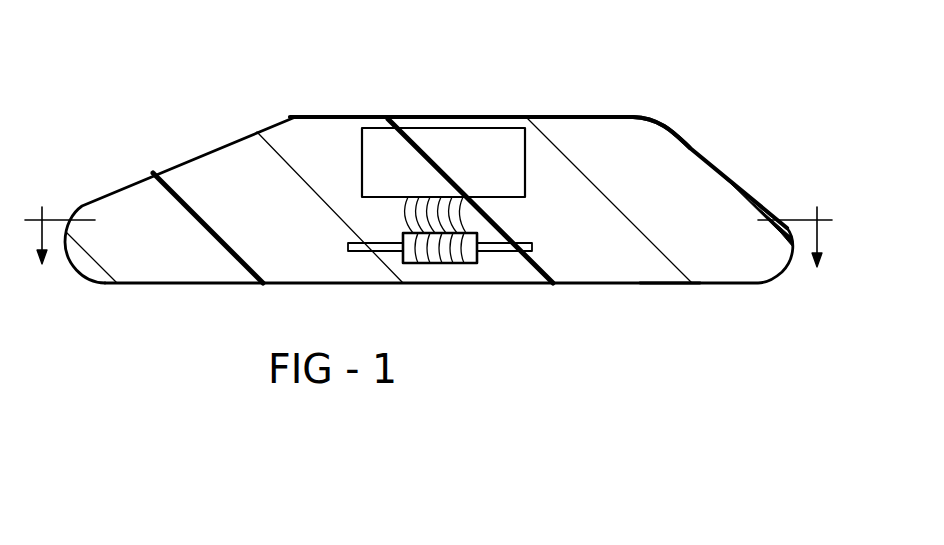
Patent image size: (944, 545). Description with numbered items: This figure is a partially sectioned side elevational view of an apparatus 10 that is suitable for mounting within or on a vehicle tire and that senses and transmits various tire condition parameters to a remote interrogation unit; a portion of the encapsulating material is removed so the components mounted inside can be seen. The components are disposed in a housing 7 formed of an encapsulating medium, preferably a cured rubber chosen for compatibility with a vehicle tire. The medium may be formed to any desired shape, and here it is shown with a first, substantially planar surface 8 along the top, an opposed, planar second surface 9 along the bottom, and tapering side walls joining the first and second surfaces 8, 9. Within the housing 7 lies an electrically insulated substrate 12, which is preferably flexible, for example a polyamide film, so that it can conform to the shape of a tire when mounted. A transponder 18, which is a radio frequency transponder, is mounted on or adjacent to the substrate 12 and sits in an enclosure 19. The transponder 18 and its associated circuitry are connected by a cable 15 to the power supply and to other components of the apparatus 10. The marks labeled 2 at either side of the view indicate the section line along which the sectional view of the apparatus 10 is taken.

The apparatus 10 is at (163, 98).
The first substantially planar surface 8 is at (322, 115).
The housing of encapsulating medium 7 is at (637, 130).
The second planar surface 9 is at (665, 283).
The transponder 18 is at (413, 149).
The enclosure 19 is at (478, 125).
The electrically insulated substrate 12 is at (373, 249).
The cable 15 is at (470, 213).
The section line 2- 2 is at (428, 217).